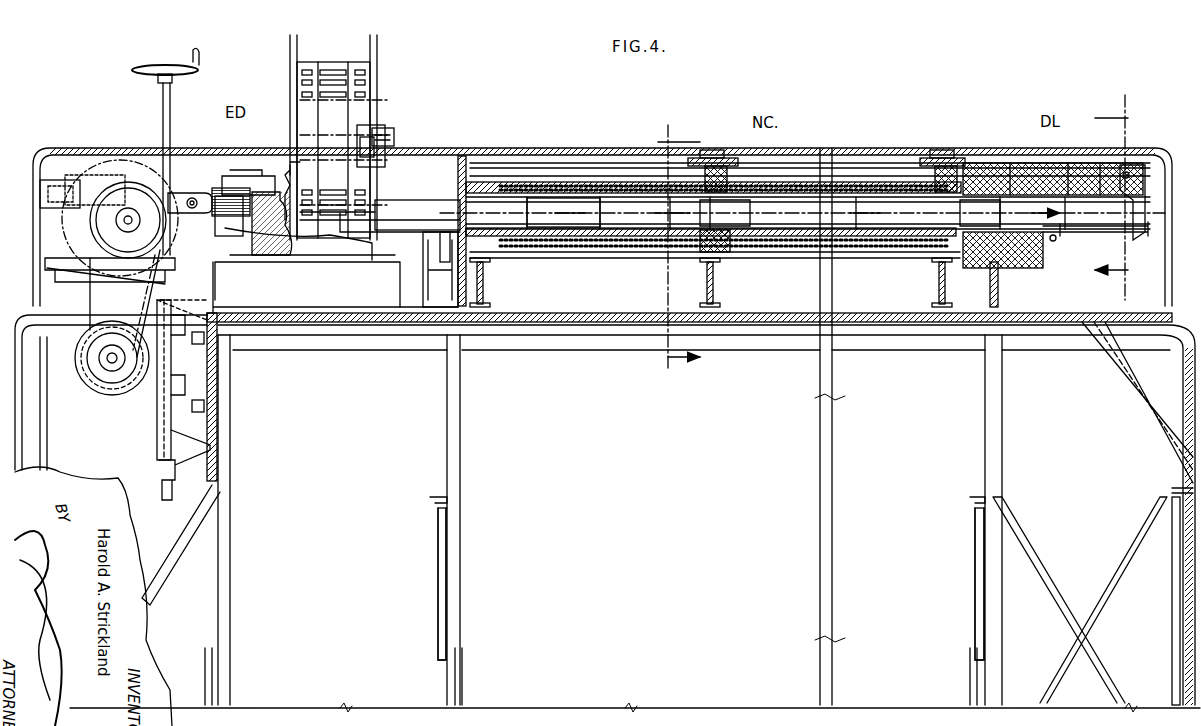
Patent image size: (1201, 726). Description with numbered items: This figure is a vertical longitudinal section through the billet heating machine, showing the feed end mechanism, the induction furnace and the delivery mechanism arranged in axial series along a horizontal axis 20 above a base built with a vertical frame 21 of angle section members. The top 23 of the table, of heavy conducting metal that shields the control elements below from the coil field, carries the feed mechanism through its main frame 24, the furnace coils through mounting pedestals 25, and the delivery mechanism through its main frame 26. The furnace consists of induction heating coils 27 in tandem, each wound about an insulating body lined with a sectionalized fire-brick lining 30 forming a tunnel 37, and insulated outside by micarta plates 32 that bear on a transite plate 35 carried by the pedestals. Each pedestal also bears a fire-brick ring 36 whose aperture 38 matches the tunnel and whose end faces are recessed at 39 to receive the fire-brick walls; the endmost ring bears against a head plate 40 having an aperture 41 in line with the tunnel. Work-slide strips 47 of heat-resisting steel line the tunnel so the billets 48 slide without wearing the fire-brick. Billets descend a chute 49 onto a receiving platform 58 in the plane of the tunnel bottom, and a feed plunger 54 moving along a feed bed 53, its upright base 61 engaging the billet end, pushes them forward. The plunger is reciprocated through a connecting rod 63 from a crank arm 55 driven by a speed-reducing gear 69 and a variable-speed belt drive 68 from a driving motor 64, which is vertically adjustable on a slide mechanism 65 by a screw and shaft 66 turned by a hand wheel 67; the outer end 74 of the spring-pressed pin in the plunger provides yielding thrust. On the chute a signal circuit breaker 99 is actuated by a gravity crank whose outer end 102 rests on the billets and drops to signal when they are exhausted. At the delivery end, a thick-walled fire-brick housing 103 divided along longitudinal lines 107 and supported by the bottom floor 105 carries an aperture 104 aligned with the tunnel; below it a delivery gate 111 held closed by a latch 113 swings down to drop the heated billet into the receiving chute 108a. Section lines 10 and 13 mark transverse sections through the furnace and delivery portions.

The section line 10 is at (679, 250).
The section line 13 is at (1112, 196).
The horizontal axis 20 is at (505, 200).
The vertical frame 21 is at (1180, 360).
The top 23 is at (772, 318).
The main frame 24 is at (380, 303).
The mounting pedestals 25 is at (484, 285).
The main frame 26 is at (999, 297).
The induction heating coils 27 is at (545, 185).
The fire-brick lining 30 is at (625, 182).
The insulation plates 32 is at (580, 250).
The transite plate 35 is at (550, 250).
The fire-brick ring 36 is at (715, 185).
The tunnel 37 is at (478, 205).
The aperture 38 is at (708, 190).
The recess 39 is at (706, 165).
The head plate 40 is at (470, 172).
The aperture 41 is at (444, 222).
The work-slide strips 47 is at (555, 222).
The billets 48 is at (408, 210).
The chute 49 is at (378, 42).
The feed bed 53 is at (255, 255).
The feed plunger 54 is at (222, 225).
The crank arm 55 is at (50, 183).
The receiving platform 58 is at (420, 240).
The base 61 is at (235, 180).
The connecting rod 63 is at (178, 190).
The driving motor 64 is at (112, 390).
The slide mechanism 65 is at (165, 425).
The screw and shaft 66 is at (163, 120).
The hand wheel 67 is at (152, 66).
The variable-speed belt drive 68 is at (150, 283).
The speed-reducing gear 69 is at (72, 245).
The outer end of pin 74 is at (214, 200).
The switch 99 is at (392, 130).
The outer end of crank 102 is at (390, 140).
The housing 103 is at (1040, 165).
The aperture 104 is at (1085, 190).
The bottom floor 105 is at (1035, 262).
The longitudinal division lines 107 is at (1000, 165).
The receiving chute 108a is at (1115, 376).
The delivery gate 111 is at (1112, 236).
The latch 113 is at (1150, 168).